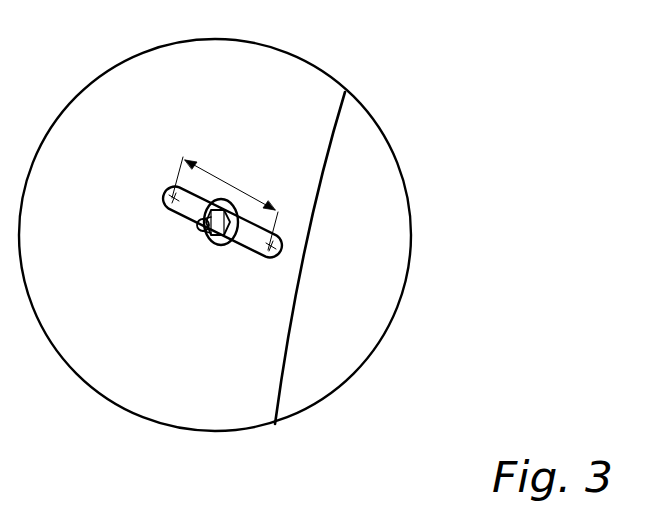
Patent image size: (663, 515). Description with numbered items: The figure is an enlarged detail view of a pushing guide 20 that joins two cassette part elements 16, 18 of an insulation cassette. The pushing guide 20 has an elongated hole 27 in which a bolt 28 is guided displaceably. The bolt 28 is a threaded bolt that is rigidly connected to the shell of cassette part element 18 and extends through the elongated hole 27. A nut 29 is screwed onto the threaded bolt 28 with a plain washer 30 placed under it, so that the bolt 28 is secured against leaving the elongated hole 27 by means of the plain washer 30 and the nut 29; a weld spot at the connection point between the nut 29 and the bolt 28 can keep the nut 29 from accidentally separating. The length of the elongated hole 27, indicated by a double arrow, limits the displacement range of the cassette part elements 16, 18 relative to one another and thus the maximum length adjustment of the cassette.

The cassette part element 16 is at (111, 122).
The cassette part element 18 is at (380, 262).
The pushing guide 20 is at (297, 108).
The elongated hole 27 is at (166, 220).
The bolt 28 is at (200, 234).
The nut 29 is at (212, 236).
The plain washer 30 is at (221, 245).